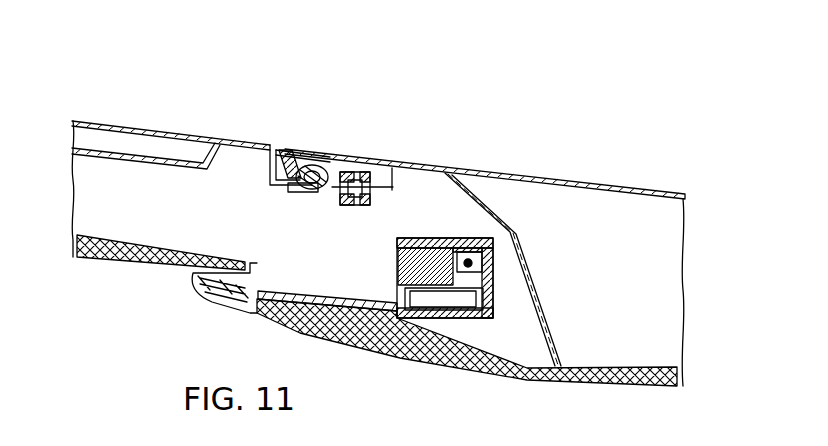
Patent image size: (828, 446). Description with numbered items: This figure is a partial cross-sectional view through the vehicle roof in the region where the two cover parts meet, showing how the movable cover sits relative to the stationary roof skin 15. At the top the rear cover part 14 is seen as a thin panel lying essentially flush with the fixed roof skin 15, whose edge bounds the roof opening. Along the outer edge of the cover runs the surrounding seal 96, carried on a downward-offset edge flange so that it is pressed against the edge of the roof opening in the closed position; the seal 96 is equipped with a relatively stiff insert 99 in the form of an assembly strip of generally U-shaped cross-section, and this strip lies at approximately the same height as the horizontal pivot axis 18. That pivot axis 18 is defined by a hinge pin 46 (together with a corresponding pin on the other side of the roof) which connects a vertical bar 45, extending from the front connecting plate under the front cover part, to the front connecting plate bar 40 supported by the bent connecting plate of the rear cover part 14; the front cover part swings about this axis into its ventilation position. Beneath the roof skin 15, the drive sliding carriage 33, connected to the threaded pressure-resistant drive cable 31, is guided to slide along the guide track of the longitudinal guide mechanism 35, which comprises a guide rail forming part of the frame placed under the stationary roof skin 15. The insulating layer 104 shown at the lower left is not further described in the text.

The rear cover part 14 is at (120, 122).
The stationary roof skin 15 is at (608, 188).
The horizontal pivot axis 18 is at (398, 158).
The surrounding seal 96 is at (290, 150).
The insert 99 is at (303, 191).
The hinge pin 46 is at (372, 172).
The vertical bar 45 is at (343, 205).
The front connecting plate bar 40 is at (370, 206).
The insulation layer 104 is at (115, 251).
The drive sliding carriage 33 is at (400, 318).
The drive cable 31 is at (458, 286).
The longitudinal guide mechanism 35 is at (487, 281).